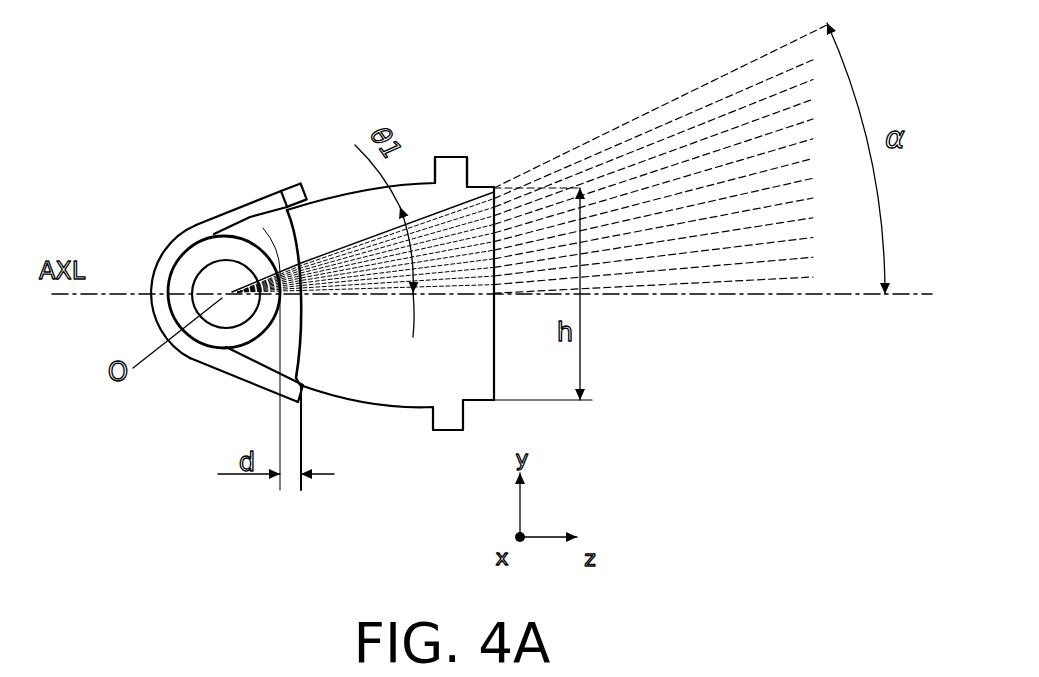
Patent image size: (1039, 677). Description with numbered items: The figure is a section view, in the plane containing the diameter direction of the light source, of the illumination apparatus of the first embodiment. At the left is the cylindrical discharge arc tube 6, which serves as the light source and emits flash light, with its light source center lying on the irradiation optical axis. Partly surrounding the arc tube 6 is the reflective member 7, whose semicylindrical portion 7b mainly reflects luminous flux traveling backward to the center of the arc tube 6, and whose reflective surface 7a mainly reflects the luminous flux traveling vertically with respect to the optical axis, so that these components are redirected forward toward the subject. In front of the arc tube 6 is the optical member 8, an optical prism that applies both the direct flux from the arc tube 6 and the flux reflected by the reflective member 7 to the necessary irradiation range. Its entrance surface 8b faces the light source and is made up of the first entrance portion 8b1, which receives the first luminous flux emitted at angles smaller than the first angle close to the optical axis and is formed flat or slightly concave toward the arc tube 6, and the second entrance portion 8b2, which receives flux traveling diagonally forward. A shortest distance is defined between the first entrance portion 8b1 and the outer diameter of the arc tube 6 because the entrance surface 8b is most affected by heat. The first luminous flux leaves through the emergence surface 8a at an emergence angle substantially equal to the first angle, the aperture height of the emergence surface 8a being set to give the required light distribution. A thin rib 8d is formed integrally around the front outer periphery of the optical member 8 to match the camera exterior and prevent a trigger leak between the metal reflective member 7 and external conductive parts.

The arc tube 6 is at (203, 253).
The reflective member 7 is at (190, 360).
The reflective surface 7a is at (284, 200).
The semicylindrical portion 7b is at (178, 268).
The optical member 8 is at (382, 286).
The emergence surface 8a is at (500, 347).
The entrance surface 8b is at (292, 318).
The first entrance portion 8b1 is at (268, 220).
The second entrance portion 8b2 is at (257, 196).
The thin rib 8d is at (452, 162).